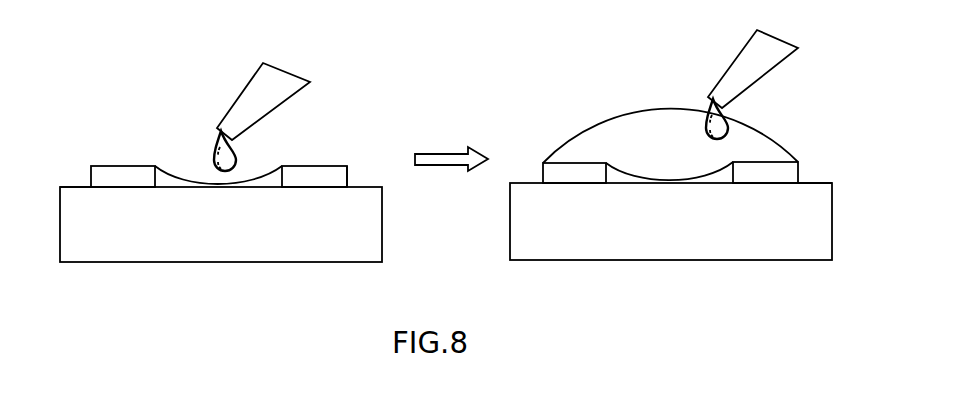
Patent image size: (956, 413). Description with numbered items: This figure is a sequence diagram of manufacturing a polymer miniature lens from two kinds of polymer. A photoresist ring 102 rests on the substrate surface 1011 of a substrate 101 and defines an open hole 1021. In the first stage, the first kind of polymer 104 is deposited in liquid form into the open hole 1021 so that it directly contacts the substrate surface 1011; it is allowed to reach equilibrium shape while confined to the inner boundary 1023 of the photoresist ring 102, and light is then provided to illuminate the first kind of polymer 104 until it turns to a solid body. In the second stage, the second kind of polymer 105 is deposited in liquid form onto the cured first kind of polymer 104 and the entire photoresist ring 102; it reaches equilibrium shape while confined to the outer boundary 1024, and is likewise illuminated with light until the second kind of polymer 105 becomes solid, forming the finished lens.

The substrate 101 is at (220, 238).
The substrate surface 1011 is at (80, 185).
The photoresist ring 102 is at (297, 175).
The open hole 1021 is at (193, 187).
The inner boundary 1023 is at (156, 175).
The outer boundary 1024 is at (348, 168).
The first kind of polymer 104 is at (210, 180).
The second kind of polymer 105 is at (670, 142).